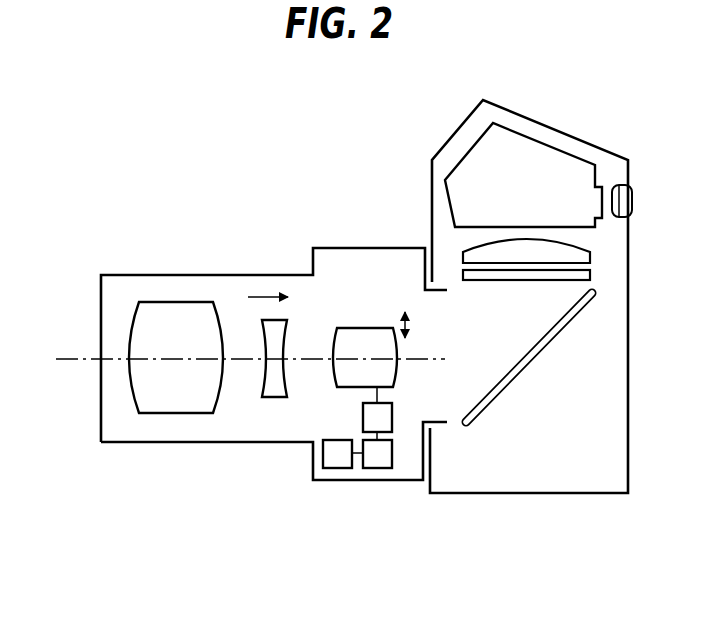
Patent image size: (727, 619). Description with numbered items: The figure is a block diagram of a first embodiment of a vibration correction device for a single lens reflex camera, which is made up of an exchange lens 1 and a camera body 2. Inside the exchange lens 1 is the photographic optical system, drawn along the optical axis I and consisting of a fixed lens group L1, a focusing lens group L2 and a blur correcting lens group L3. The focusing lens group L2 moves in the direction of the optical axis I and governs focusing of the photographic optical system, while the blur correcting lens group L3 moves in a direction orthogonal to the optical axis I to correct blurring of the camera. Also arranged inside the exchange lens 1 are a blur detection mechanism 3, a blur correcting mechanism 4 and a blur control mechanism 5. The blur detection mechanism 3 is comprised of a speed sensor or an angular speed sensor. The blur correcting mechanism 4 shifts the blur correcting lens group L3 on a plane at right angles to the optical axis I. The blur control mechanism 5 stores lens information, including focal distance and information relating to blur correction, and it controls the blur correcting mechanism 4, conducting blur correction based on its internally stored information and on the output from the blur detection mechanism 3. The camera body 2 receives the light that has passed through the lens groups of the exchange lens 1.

The exchange lens 1 is at (181, 153).
The camera body 2 is at (544, 111).
The blur detection mechanism 3 is at (340, 458).
The blur correcting mechanism 4 is at (390, 421).
The blur control mechanism 5 is at (378, 457).
The fixed lens group L1 is at (164, 315).
The focusing lens group L2 is at (275, 328).
The blur correcting lens group L3 is at (367, 342).
The optical axis I is at (72, 359).